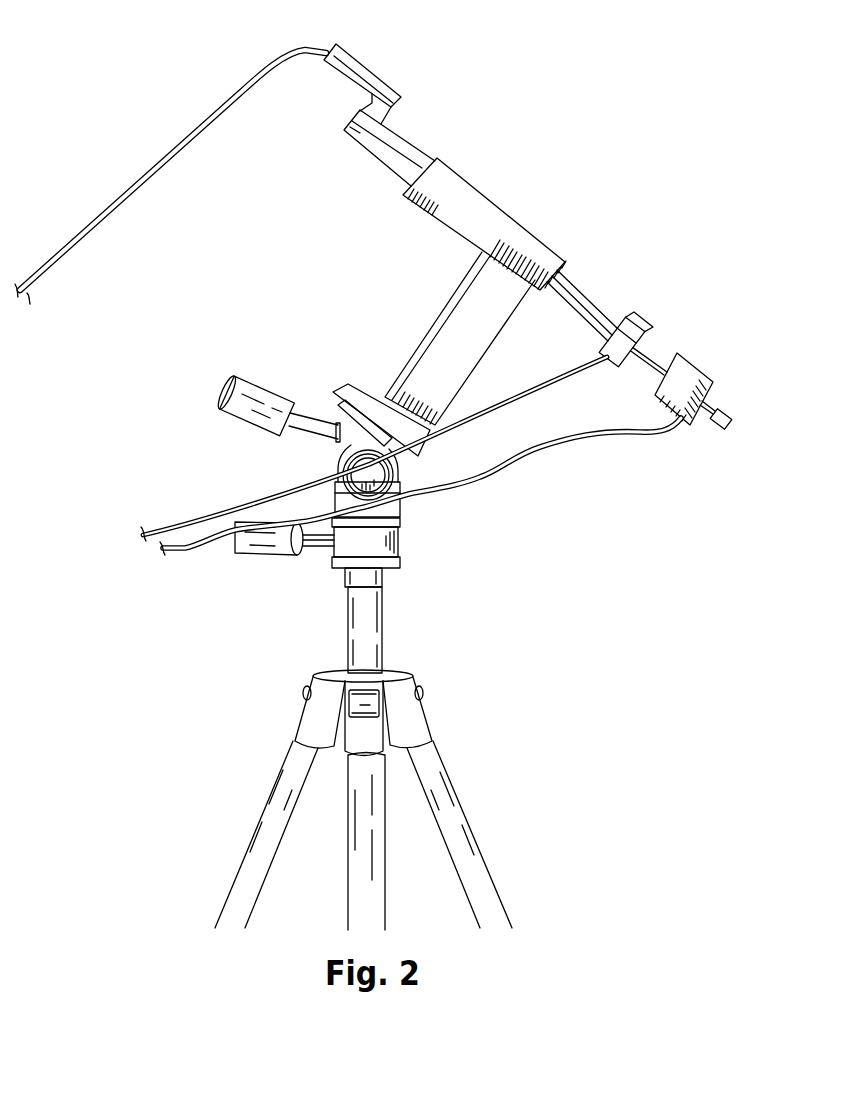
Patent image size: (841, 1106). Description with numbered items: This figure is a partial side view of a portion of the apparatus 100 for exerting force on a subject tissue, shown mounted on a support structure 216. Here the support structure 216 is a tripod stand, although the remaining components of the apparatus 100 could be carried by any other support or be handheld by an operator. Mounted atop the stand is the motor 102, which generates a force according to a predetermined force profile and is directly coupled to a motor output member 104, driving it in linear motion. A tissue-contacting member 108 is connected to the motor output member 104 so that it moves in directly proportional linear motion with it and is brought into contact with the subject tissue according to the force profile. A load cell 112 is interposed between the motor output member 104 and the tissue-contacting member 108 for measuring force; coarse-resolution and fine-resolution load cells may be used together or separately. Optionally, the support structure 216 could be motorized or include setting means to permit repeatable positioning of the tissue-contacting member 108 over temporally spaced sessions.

The apparatus 100 is at (148, 92).
The motor 102 is at (458, 186).
The motor output member 104 is at (586, 300).
The tissue-contacting member 108 is at (685, 370).
The load cell 112 is at (657, 336).
The support structure 216 is at (410, 625).